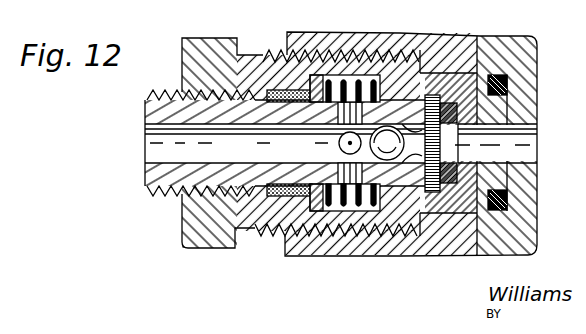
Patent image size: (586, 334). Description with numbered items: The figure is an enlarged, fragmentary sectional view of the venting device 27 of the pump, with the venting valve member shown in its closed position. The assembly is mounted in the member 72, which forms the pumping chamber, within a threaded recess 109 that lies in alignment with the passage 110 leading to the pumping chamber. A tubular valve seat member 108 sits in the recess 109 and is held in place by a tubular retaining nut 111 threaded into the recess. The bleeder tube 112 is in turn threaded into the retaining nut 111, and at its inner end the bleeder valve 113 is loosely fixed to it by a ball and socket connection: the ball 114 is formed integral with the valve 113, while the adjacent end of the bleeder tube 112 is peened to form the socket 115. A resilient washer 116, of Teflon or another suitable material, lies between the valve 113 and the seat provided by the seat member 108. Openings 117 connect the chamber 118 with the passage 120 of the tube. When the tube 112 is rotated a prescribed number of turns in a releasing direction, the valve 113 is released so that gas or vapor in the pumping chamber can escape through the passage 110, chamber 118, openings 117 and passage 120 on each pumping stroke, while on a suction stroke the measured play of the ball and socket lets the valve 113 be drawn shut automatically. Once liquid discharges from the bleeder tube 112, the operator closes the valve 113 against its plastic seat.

The venting device 27 is at (178, 232).
The member 72 is at (520, 55).
The tubular valve seat member 108 is at (448, 75).
The threaded recess 109 is at (468, 230).
The passage 110 is at (537, 133).
The tubular retaining nut 111 is at (262, 229).
The bleeder tube 112 is at (147, 182).
The bleeder valve 113 is at (497, 112).
The ball 114 is at (386, 132).
The socket 115 is at (398, 198).
The resilient washer 116 is at (507, 182).
The openings 117 is at (323, 212).
The chamber 118 is at (322, 84).
The passage 120 is at (145, 145).